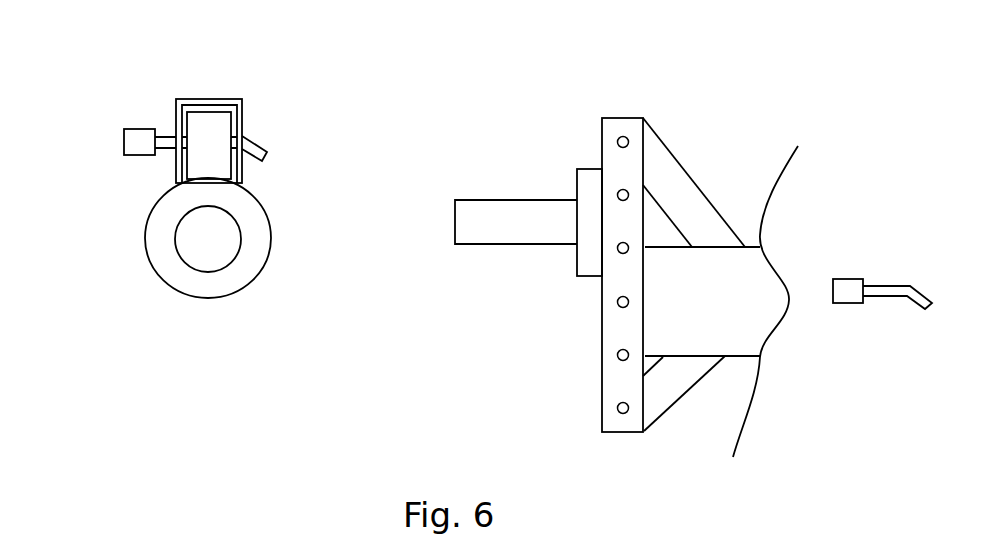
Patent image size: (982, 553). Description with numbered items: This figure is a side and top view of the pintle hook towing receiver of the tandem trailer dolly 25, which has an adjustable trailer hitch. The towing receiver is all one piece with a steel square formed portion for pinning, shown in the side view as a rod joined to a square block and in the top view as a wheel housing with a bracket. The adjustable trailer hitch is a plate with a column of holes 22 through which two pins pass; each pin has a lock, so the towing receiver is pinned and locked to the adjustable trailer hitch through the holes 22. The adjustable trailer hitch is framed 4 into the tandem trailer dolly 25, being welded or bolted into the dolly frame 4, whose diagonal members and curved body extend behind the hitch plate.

The frame 4 is at (667, 148).
The holes 22 is at (627, 127).
The tandem trailer dolly 25 is at (523, 252).